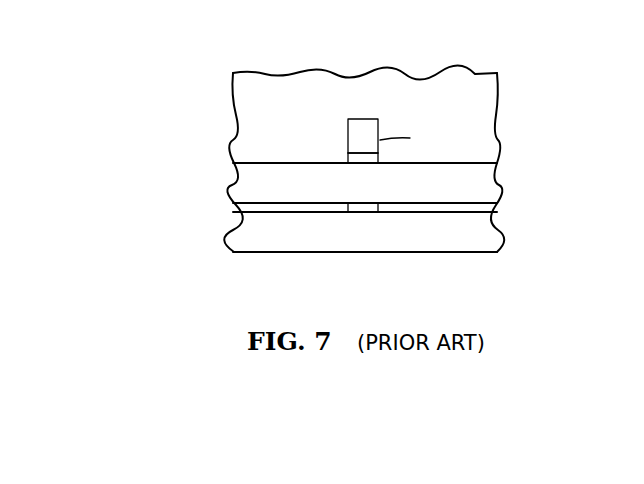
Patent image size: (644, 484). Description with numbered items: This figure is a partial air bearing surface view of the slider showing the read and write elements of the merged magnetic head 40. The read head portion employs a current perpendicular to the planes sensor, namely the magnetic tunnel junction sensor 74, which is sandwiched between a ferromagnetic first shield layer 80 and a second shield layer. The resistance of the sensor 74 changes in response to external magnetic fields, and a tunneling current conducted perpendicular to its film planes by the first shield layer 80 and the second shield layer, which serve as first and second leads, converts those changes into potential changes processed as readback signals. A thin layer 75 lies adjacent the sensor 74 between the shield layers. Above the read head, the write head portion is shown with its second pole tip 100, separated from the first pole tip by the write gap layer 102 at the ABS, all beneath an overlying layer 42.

The merged magnetic head 40 is at (518, 84).
The upper dielectric layer 42 is at (240, 94).
The first shield layer 80 is at (483, 231).
The magnetic tunnel junction sensor 74 is at (363, 210).
The thin interlayer 75 is at (265, 208).
The second pole tip 100 is at (366, 121).
The write gap layer 102 is at (362, 160).